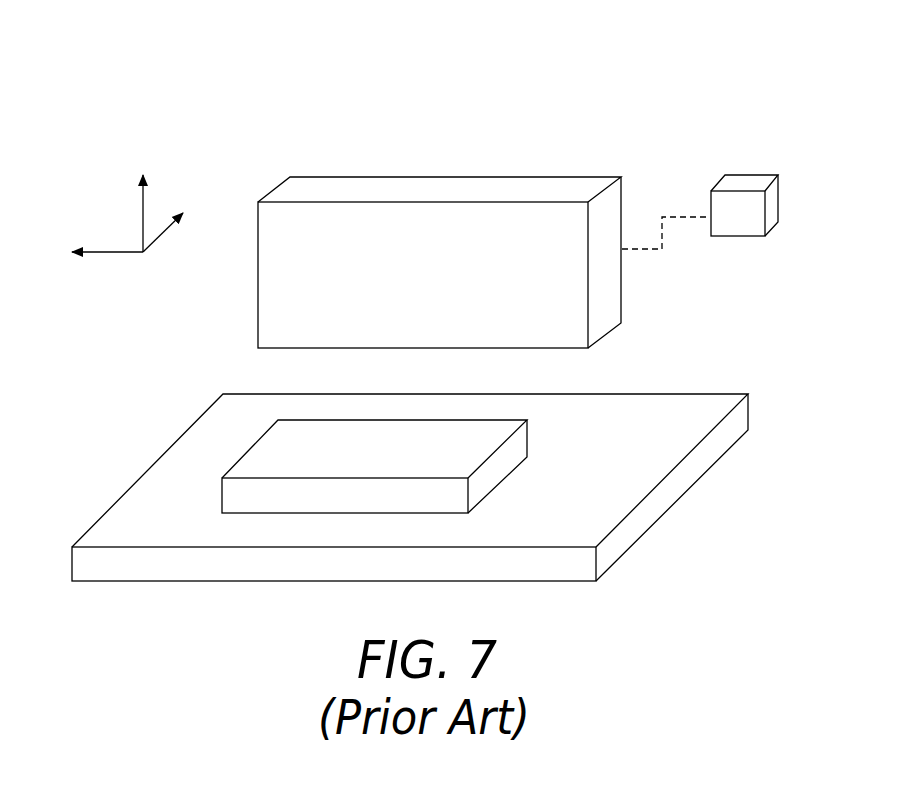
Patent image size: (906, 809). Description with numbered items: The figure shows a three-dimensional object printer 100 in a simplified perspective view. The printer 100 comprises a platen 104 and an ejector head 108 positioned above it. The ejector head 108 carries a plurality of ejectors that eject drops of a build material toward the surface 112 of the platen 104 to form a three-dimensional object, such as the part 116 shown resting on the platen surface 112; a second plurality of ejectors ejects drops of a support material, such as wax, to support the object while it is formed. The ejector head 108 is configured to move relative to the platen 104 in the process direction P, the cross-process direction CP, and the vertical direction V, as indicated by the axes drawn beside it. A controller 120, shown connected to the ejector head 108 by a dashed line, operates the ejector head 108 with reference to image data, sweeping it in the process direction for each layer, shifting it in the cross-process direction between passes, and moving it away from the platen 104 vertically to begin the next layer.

The three-dimensional object printer 100 is at (263, 88).
The platen 104 is at (737, 420).
The ejector head 108 is at (499, 193).
The surface of the platen 112 is at (170, 470).
The part 116 is at (308, 433).
The controller 120 is at (745, 182).